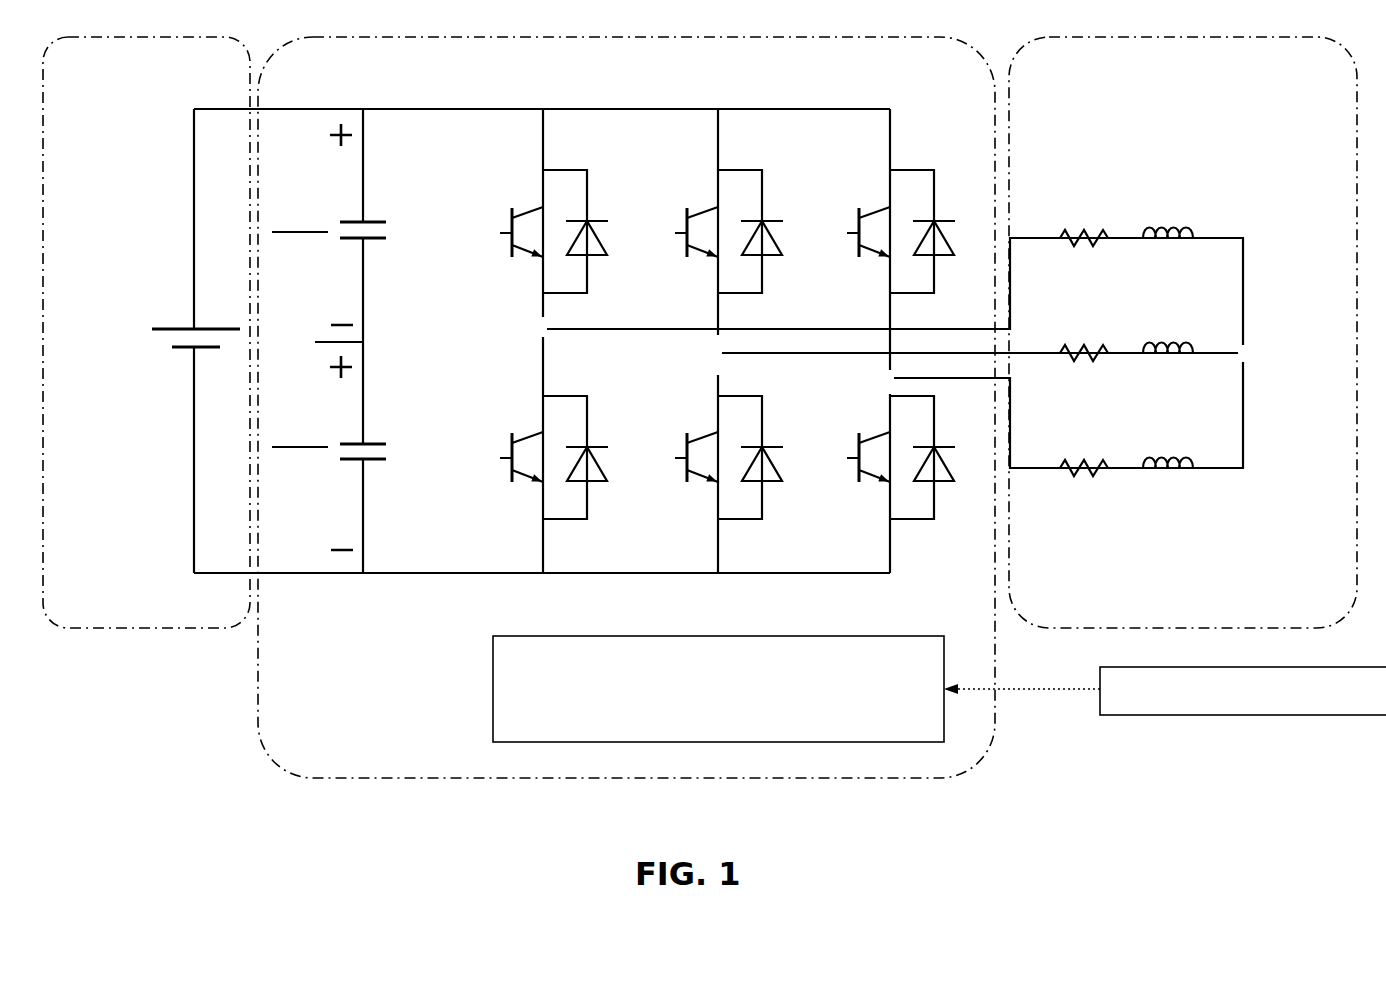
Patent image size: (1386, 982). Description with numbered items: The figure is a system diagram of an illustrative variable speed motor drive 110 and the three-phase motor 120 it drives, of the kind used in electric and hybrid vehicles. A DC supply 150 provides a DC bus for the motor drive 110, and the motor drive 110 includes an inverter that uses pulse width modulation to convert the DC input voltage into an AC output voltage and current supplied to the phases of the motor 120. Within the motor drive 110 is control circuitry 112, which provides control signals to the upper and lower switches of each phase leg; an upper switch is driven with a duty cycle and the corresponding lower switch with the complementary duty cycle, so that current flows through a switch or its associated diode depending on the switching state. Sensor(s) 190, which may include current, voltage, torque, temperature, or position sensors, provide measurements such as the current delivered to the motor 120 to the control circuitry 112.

The DC supply 150 is at (146, 332).
The motor drive 110 is at (718, 407).
The motor 120 is at (1183, 332).
The control circuitry 112 is at (718, 689).
The sensor(s) 190 is at (1165, 691).